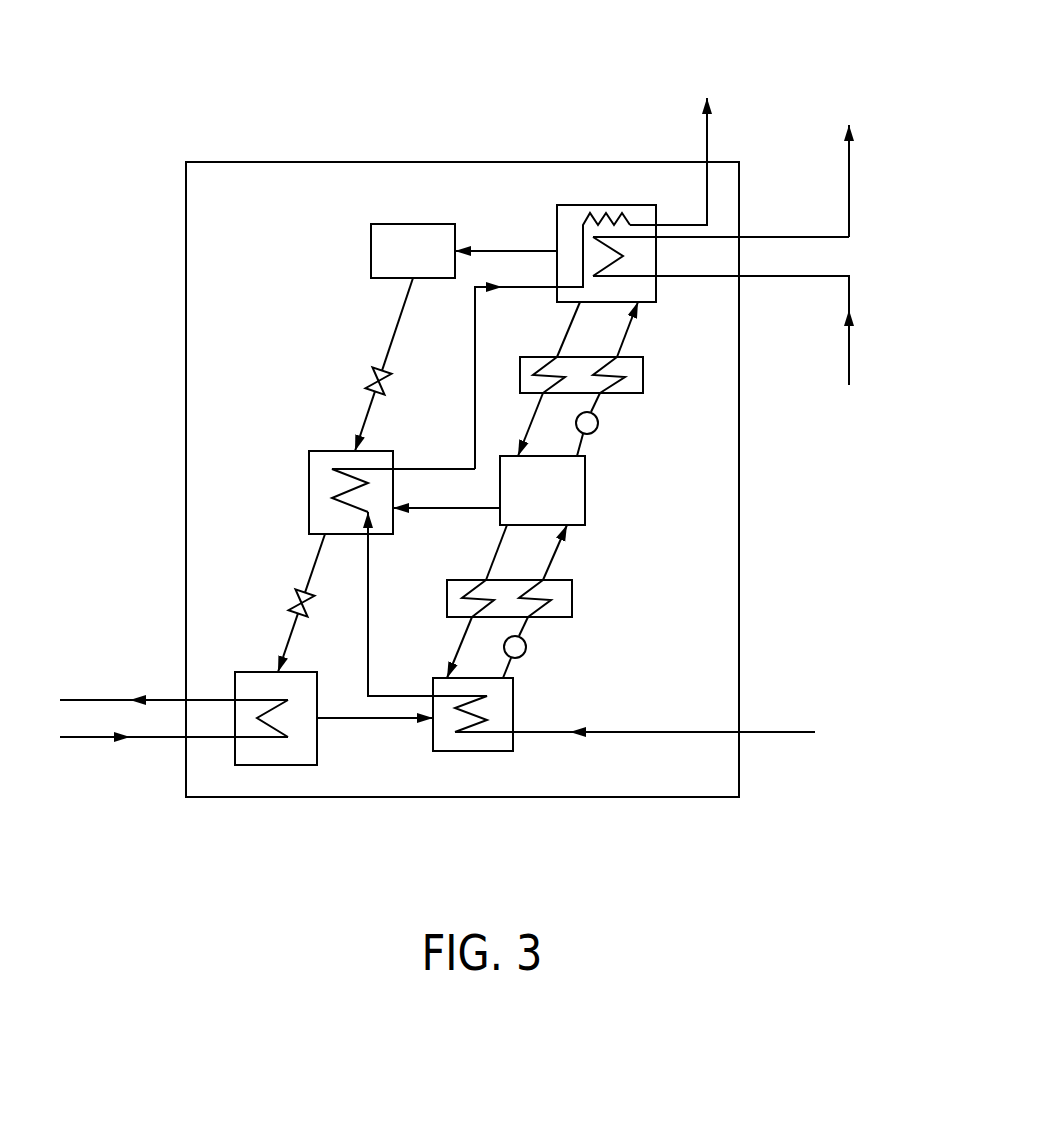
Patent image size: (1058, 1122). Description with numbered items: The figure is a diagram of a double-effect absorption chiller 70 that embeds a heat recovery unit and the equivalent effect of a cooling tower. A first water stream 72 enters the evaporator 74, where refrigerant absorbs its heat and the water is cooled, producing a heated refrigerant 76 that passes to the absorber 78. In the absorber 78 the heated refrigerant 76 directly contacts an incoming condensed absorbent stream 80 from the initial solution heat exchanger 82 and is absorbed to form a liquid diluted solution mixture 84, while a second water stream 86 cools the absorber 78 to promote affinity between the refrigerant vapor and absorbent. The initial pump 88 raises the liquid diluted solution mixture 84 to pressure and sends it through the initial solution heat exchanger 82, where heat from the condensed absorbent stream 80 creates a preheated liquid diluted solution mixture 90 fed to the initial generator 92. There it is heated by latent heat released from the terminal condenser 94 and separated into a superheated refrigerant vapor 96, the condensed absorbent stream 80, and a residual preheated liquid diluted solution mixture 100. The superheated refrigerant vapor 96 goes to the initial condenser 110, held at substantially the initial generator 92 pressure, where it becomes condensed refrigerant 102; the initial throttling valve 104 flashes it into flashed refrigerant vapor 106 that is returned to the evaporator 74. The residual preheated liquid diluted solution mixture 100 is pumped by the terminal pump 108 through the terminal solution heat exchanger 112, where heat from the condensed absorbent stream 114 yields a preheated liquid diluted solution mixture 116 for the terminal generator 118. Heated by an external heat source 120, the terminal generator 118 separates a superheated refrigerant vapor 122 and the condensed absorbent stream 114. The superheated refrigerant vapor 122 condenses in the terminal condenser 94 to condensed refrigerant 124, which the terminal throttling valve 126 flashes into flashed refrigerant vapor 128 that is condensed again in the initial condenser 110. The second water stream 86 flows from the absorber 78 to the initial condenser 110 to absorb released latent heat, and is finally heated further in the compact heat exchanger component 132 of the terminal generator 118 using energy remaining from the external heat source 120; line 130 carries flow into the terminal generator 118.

The double-effect absorption chiller 70 is at (247, 160).
The first water stream 72 is at (115, 741).
The evaporator 74 is at (277, 768).
The heated refrigerant 76 is at (365, 720).
The absorber 78 is at (473, 753).
The condensed absorbent stream 80 is at (454, 655).
The initial solution heat exchanger 82 is at (574, 595).
The liquid diluted solution mixture 84 is at (510, 667).
The second water stream 86 is at (643, 734).
The initial pump 88 is at (529, 647).
The preheated liquid diluted solution mixture 90 is at (557, 555).
The initial generator 92 is at (588, 492).
The terminal condenser 94 is at (415, 222).
The superheated refrigerant vapor 96 is at (437, 504).
The residual preheated liquid diluted solution mixture 100 is at (583, 446).
The condensed refrigerant 102 is at (314, 561).
The initial throttling valve 104 is at (291, 600).
The flashed refrigerant vapor 106 is at (287, 637).
The terminal pump 108 is at (600, 423).
The initial condenser 110 is at (307, 483).
The terminal solution heat exchanger 112 is at (645, 375).
The condensed absorbent stream 114 is at (575, 322).
The preheated liquid diluted solution mixture 116 is at (626, 343).
The terminal generator 118 is at (590, 205).
The external heat source 120 is at (851, 345).
The superheated refrigerant vapor 122 is at (482, 249).
The condensed refrigerant 124 is at (397, 317).
The terminal throttling valve 126 is at (366, 385).
The flashed refrigerant vapor 128 is at (362, 423).
The line 130 is at (530, 285).
The heat exchanger component 132 is at (630, 221).